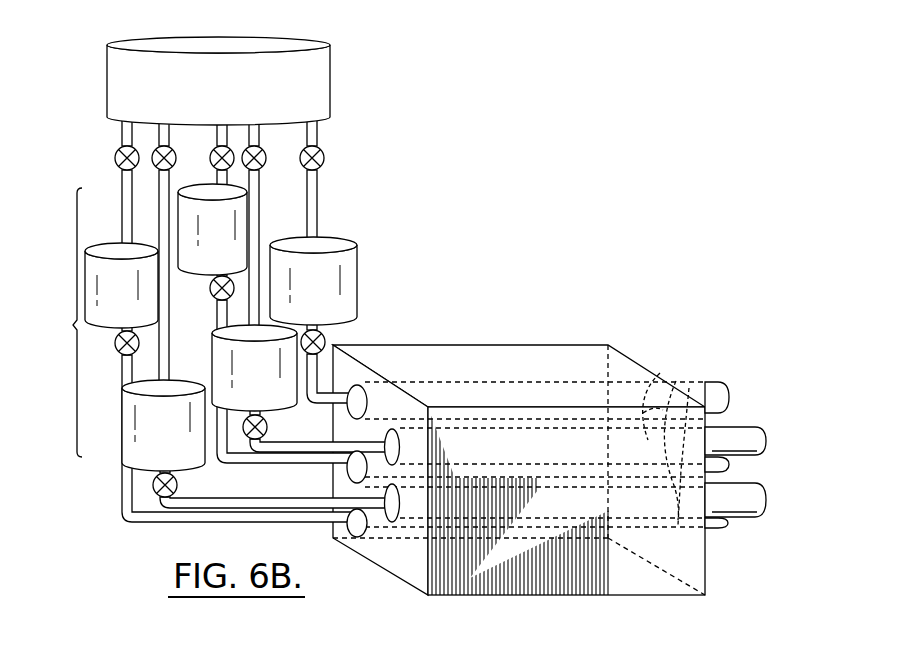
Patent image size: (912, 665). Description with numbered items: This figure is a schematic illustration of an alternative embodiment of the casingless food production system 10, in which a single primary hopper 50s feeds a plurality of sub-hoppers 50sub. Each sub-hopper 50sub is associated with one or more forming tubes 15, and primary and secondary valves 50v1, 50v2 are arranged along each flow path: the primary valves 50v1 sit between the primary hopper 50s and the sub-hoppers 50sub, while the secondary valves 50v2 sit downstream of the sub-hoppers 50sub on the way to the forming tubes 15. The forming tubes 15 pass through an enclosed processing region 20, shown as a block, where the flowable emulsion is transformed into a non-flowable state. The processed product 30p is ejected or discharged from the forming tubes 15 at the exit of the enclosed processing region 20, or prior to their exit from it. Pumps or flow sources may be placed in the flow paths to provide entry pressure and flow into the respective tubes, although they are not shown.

The casingless food production system 10 is at (536, 193).
The forming tube 15 is at (689, 388).
The processing region 20 is at (551, 332).
The non-flowable state product 30p is at (750, 498).
The primary hopper 50s is at (335, 78).
The sub-hoppers 50sub is at (110, 245).
The primary valves 50v1 is at (253, 146).
The secondary valves 50v2 is at (325, 338).